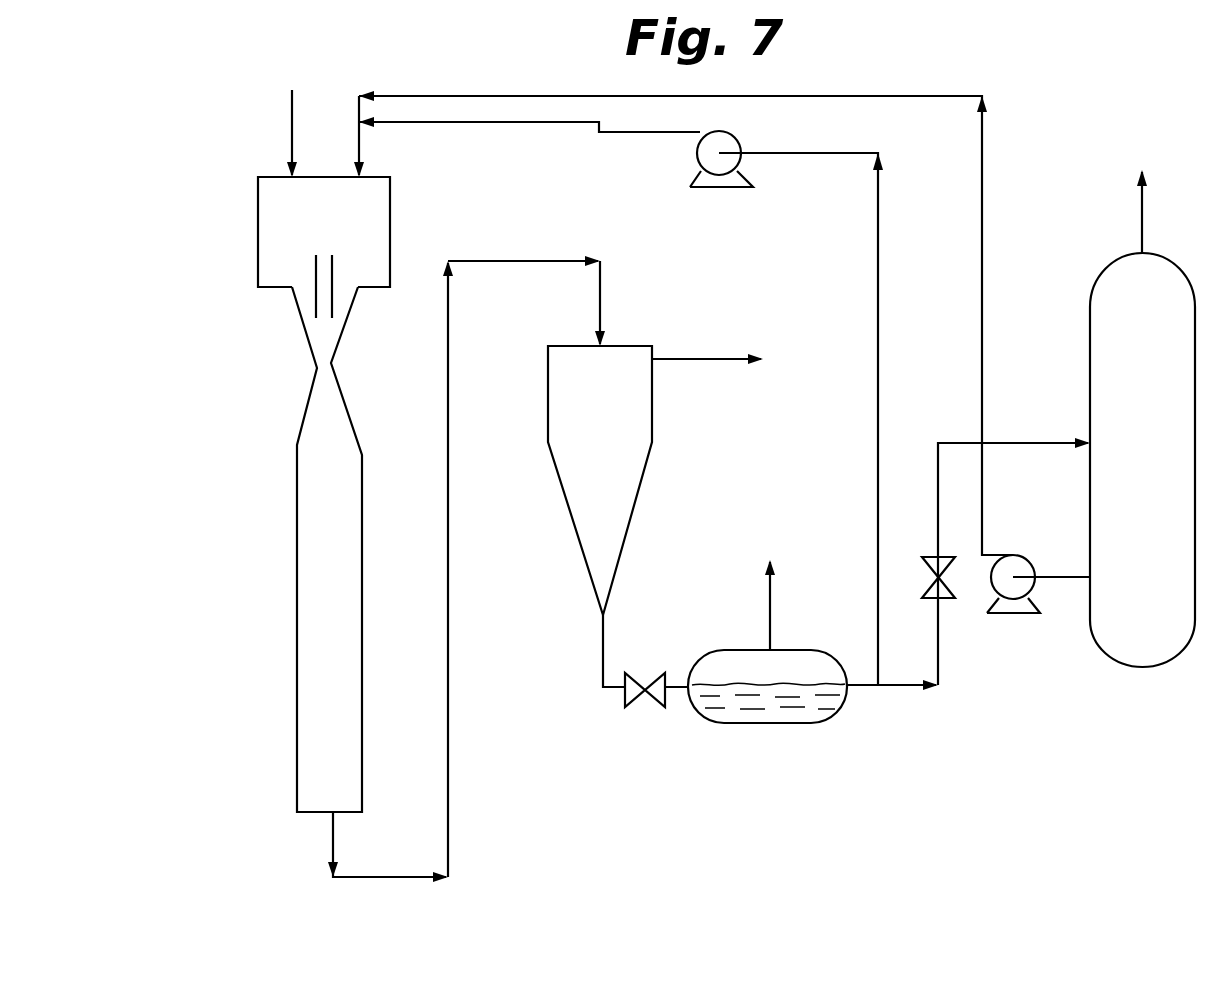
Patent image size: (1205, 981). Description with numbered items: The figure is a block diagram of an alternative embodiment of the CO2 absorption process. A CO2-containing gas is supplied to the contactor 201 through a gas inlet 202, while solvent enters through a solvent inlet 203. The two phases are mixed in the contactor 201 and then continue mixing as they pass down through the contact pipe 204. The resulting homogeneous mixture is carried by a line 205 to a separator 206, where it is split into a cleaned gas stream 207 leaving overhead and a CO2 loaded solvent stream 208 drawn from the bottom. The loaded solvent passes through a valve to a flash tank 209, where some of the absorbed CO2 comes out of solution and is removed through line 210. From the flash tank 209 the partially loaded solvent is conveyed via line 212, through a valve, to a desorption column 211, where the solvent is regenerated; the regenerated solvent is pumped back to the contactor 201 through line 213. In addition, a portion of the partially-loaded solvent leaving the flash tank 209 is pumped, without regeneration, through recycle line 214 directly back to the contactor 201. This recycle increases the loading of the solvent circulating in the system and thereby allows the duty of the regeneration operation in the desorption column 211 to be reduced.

The contactor 201 is at (258, 238).
The gas inlet 202 is at (292, 115).
The solvent inlet 203 is at (362, 163).
The contact pipe 204 is at (300, 557).
The line 205 is at (450, 600).
The separator 206 is at (627, 510).
The cleaned gas stream 207 is at (683, 360).
The CO2 loaded solvent stream 208 is at (603, 635).
The flash tank 209 is at (805, 715).
The line 210 is at (770, 600).
The desorption column 211 is at (1158, 470).
The line 212 is at (938, 450).
The line 213 is at (983, 150).
The recycle line 214 is at (877, 277).